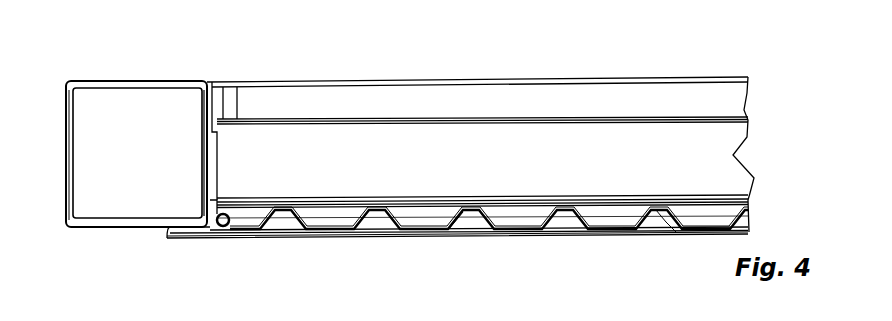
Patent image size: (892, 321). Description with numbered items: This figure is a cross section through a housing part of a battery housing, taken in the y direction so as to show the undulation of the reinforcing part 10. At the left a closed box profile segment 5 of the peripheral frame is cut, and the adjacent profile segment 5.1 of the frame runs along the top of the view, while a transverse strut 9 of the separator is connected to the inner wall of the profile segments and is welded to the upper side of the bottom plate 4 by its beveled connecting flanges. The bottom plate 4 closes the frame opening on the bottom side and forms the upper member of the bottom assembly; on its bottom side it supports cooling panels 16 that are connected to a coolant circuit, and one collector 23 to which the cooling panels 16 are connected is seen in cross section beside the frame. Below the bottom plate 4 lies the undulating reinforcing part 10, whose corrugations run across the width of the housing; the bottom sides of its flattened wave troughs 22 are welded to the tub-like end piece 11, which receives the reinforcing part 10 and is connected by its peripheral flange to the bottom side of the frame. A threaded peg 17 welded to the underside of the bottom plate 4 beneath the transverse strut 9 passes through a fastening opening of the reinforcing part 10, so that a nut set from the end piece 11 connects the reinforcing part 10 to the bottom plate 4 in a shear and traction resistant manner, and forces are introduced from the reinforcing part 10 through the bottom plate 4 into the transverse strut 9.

The profile segment 5 is at (127, 80).
The profile segment 5.1 is at (531, 110).
The transverse strut 9 is at (554, 163).
The reinforcing part 10 is at (503, 198).
The bottom plate 4 is at (605, 197).
The flattened wave trough 22 is at (413, 212).
The collector 23 is at (220, 228).
The end piece 11 is at (357, 238).
The cooling panel 16 is at (448, 230).
The threaded peg 17 is at (663, 222).